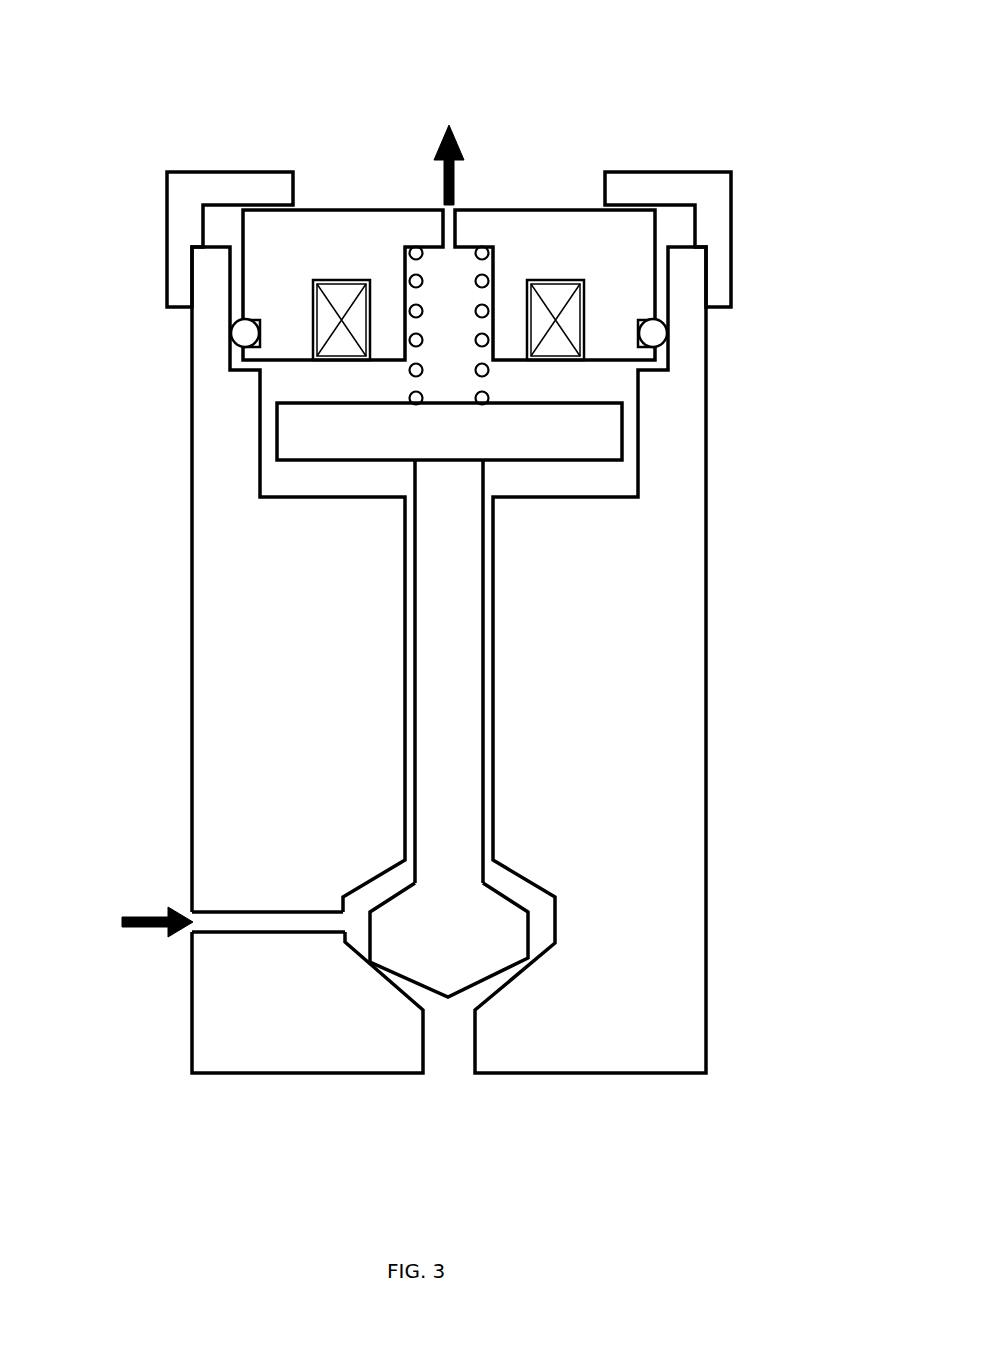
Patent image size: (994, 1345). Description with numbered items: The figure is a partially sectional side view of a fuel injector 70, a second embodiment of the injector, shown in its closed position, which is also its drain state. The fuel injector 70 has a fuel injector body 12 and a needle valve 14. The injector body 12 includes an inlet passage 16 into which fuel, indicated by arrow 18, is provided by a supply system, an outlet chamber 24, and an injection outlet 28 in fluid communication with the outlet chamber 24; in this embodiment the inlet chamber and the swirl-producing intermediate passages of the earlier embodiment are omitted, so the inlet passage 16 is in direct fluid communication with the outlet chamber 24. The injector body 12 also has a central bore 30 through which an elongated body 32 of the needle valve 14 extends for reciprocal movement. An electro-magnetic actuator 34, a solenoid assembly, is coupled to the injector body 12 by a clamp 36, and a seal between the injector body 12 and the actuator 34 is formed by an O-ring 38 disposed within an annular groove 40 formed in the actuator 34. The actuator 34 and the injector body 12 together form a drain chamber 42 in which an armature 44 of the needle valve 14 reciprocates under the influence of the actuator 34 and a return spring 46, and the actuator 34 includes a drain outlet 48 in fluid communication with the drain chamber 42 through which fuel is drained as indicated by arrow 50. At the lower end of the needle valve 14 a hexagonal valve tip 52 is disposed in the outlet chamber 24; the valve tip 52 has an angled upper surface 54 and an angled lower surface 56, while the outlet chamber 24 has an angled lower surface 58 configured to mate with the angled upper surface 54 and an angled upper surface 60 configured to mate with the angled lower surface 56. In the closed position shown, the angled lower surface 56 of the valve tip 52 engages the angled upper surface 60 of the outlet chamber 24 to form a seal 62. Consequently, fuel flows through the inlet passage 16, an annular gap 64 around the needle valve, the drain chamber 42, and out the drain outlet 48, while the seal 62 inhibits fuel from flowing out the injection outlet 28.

The fuel injector body 12 is at (180, 498).
The needle valve 14 is at (461, 527).
The inlet passage 16 is at (205, 918).
The fuel 18 is at (142, 925).
The outlet chamber 24 is at (360, 903).
The injection outlet 28 is at (446, 1047).
The central bore 30 is at (493, 607).
The elongated body 32 is at (448, 662).
The electro-magnetic actuator 34 is at (364, 207).
The clamp 36 is at (163, 185).
The O-ring 38 is at (231, 333).
The annular groove 40 is at (255, 322).
The drain chamber 42 is at (628, 481).
The armature 44 is at (622, 432).
The return spring 46 is at (489, 370).
The drain outlet 48 is at (448, 227).
The fuel 50 is at (440, 128).
The valve tip 52 is at (518, 931).
The angled upper surface 54 is at (393, 880).
The angled lower surface 56 is at (410, 983).
The angled lower surface 58 is at (380, 895).
The angled upper surface 60 is at (426, 984).
The seal 62 is at (370, 962).
The annular gap 64 is at (408, 635).
The fuel injector 70 is at (726, 136).